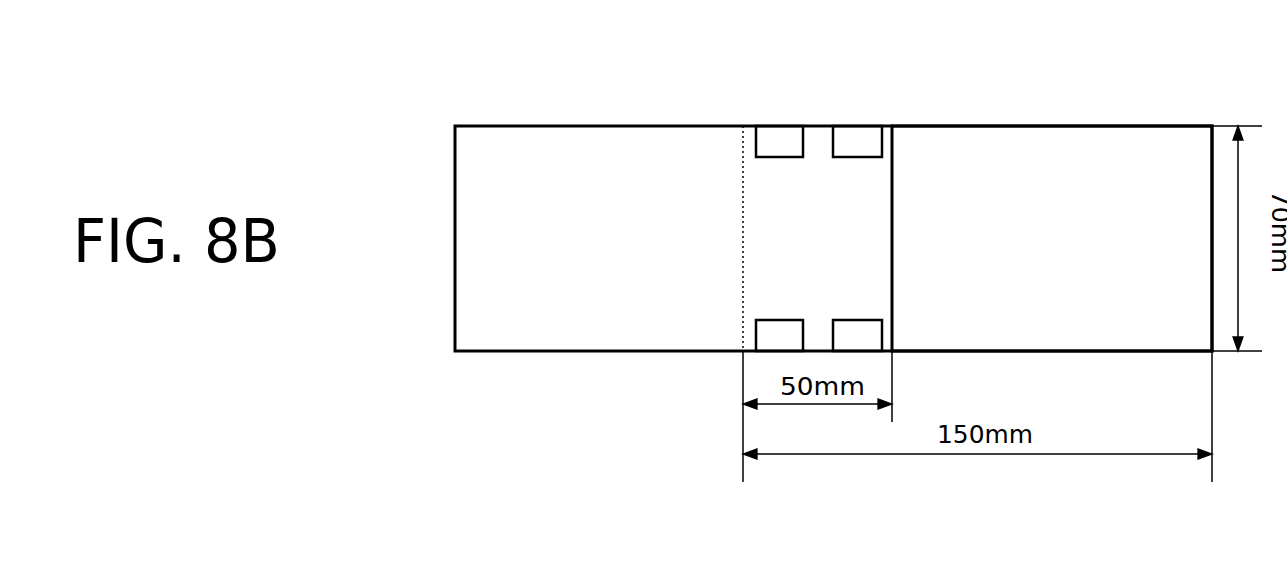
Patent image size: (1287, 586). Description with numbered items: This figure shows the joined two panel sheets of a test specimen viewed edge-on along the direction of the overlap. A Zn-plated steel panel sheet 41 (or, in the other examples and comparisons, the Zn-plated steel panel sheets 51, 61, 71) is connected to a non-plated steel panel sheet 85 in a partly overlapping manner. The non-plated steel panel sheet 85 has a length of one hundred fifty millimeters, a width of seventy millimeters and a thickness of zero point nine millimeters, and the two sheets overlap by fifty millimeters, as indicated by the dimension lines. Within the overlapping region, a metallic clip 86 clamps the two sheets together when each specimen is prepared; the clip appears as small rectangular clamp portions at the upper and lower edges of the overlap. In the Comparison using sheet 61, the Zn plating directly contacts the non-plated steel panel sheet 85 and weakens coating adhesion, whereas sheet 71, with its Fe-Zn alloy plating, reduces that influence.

The Zn-plated steel panel sheet 41 is at (833, 195).
The Zn-plated steel panel sheet 51 is at (833, 195).
The Zn-plated steel panel sheet 61 is at (833, 195).
The Zn-plated steel panel sheet 71 is at (573, 126).
The non-plated steel panel sheet 85 is at (1033, 126).
The metallic clip 86 is at (857, 126).